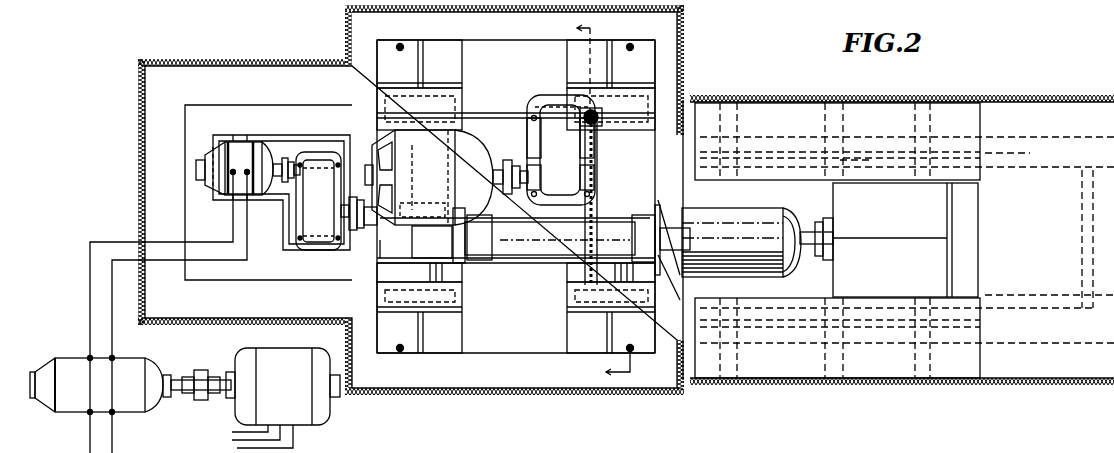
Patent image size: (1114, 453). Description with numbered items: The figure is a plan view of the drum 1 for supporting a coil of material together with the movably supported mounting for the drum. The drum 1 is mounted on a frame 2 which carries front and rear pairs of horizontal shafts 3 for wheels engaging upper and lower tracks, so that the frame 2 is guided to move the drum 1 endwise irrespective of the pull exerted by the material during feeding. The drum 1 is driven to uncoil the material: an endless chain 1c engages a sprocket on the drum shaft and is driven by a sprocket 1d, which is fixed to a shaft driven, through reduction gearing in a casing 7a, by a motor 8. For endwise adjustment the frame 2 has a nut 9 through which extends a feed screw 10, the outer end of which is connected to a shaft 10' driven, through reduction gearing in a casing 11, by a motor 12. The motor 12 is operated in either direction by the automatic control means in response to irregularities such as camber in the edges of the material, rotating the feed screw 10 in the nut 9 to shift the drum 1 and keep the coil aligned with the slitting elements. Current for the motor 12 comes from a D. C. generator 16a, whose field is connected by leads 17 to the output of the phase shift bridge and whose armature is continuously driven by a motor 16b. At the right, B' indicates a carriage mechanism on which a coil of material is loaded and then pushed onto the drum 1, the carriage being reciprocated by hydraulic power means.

The drum 1 is at (757, 228).
The endless chain 1c is at (598, 189).
The sprocket 1d is at (596, 113).
The frame 2 is at (533, 196).
The horizontal shafts 3 is at (293, 228).
The casing 7a is at (550, 110).
The motor 8 is at (478, 140).
The nut 9 is at (498, 212).
The feed screw 10 is at (614, 200).
The shaft 10' is at (359, 231).
The casing 11 is at (318, 252).
The motor 12 is at (260, 147).
The D. C. generator 16a is at (152, 371).
The motor 16b is at (262, 349).
The leads 17 is at (170, 452).
The mechanism B' is at (905, 240).